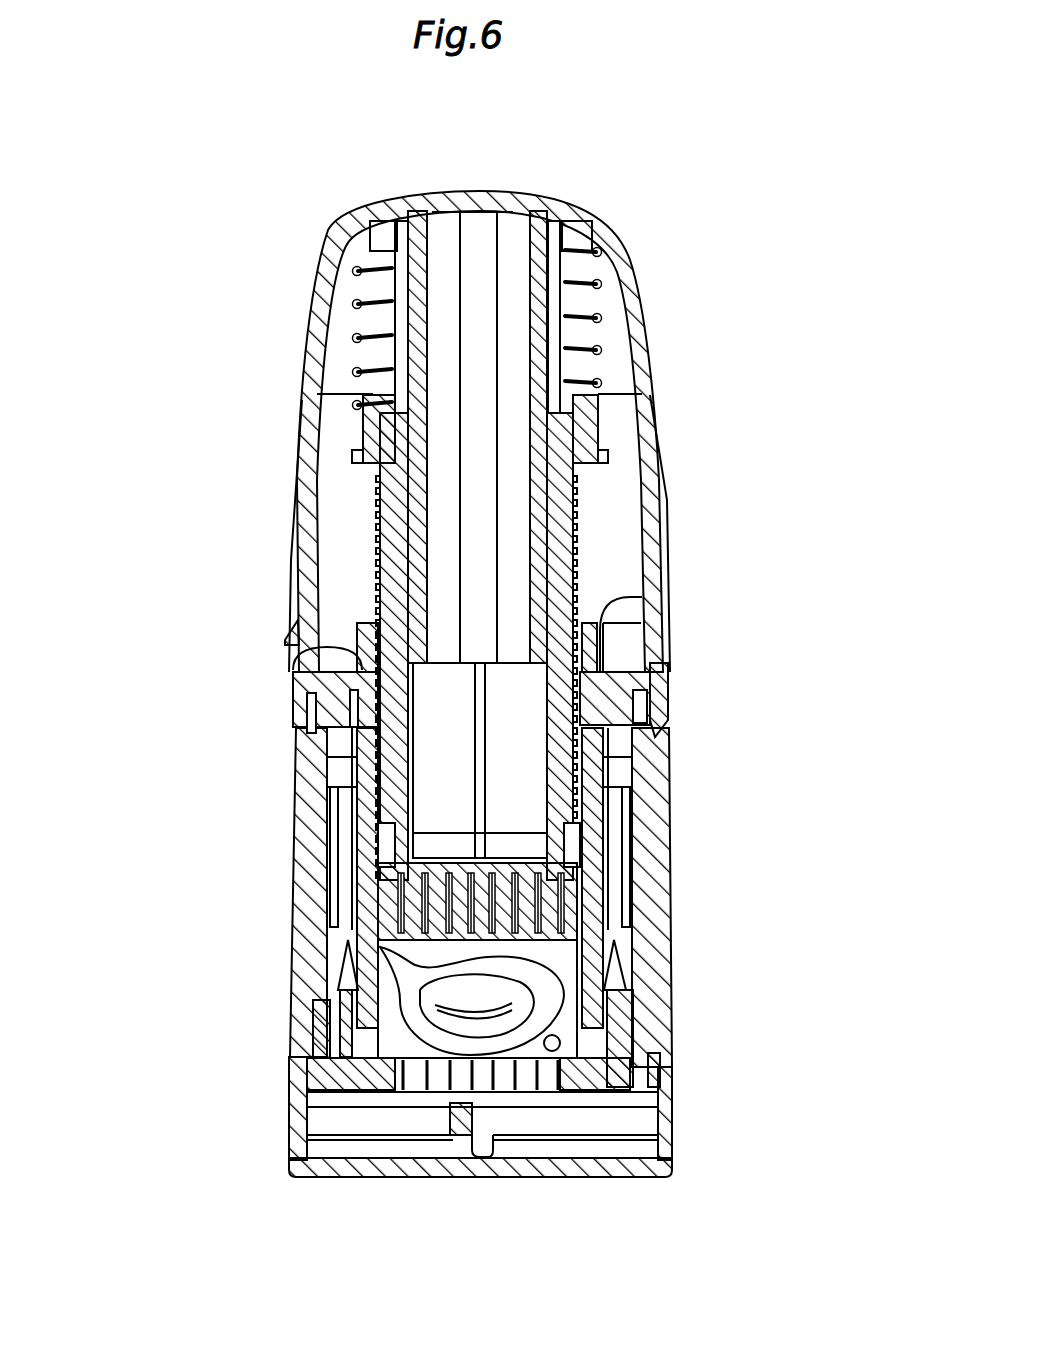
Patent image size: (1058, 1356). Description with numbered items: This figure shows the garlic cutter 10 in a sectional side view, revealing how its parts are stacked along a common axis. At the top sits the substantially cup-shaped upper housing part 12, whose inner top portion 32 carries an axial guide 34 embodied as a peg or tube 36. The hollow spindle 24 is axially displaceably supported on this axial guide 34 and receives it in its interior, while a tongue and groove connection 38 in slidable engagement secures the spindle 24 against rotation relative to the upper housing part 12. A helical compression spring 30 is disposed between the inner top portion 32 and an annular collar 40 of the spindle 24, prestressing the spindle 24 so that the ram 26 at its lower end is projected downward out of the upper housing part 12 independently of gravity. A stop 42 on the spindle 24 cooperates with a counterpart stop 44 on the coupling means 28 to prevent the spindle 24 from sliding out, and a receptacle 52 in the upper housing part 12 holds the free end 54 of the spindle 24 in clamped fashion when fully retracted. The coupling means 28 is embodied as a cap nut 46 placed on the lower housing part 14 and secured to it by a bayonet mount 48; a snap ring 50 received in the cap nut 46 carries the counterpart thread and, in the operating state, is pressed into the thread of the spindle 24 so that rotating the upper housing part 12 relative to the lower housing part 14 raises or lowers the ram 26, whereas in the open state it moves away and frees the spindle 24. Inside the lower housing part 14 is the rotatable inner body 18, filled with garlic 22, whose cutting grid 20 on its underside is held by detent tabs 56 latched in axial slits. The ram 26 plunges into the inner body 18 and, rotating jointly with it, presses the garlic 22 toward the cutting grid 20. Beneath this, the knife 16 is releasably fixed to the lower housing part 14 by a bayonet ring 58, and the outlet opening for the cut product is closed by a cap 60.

The garlic cutter 10 is at (650, 208).
The upper housing part 12 is at (650, 312).
The lower housing part 14 is at (665, 810).
The knife 16 is at (465, 1098).
The inner body 18 is at (603, 907).
The cutting grid 20 is at (460, 1092).
The garlic 22 is at (433, 1025).
The spindle 24 is at (603, 807).
The ram 26 is at (615, 988).
The coupling means 28 is at (668, 667).
The spring 30 is at (600, 362).
The inner top portion 32 is at (506, 240).
The axial guide 34 is at (400, 290).
The tube 36 is at (432, 242).
The tongue and groove connection 38 is at (393, 372).
The annular collar 40 is at (603, 457).
The stop 42 is at (370, 455).
The counterpart stop 44 is at (640, 597).
The cap nut 46 is at (652, 733).
The bayonet mount 48 is at (308, 697).
The snap ring 50 is at (303, 650).
The receptacle 52 is at (598, 270).
The free end 54 is at (372, 397).
The detent tabs 56 is at (650, 1045).
The bayonet ring 58 is at (668, 1113).
The cap 60 is at (662, 1173).